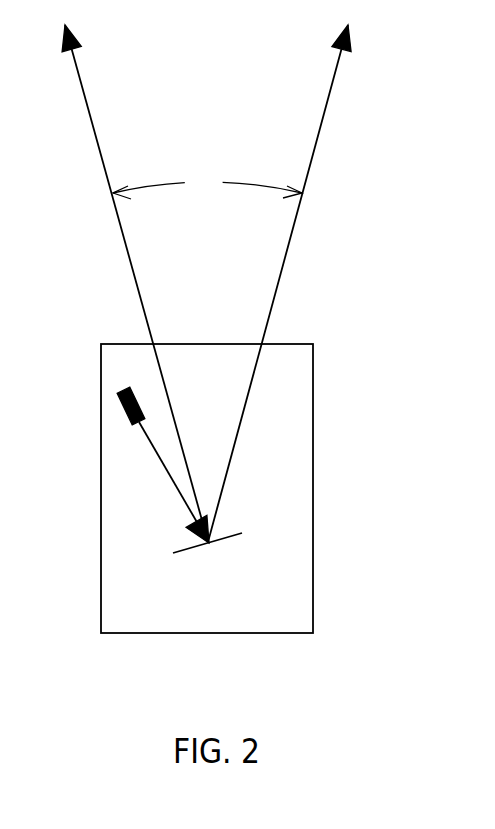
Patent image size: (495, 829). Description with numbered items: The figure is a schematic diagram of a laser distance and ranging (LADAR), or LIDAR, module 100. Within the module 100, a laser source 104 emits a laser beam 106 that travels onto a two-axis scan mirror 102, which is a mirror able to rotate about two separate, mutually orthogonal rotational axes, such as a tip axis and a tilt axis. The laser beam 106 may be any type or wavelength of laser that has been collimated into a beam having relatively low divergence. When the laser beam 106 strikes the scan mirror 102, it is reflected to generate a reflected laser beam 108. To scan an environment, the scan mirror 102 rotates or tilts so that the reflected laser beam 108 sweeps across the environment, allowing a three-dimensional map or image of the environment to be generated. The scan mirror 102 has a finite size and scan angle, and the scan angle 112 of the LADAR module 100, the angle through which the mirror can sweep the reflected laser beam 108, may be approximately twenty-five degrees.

The LADAR module 100 is at (315, 439).
The two-axis scan mirror 102 is at (228, 537).
The laser source 104 is at (118, 400).
The laser beam 106 is at (180, 498).
The reflected laser beam 108 is at (93, 120).
The scan angle 112 is at (207, 186).